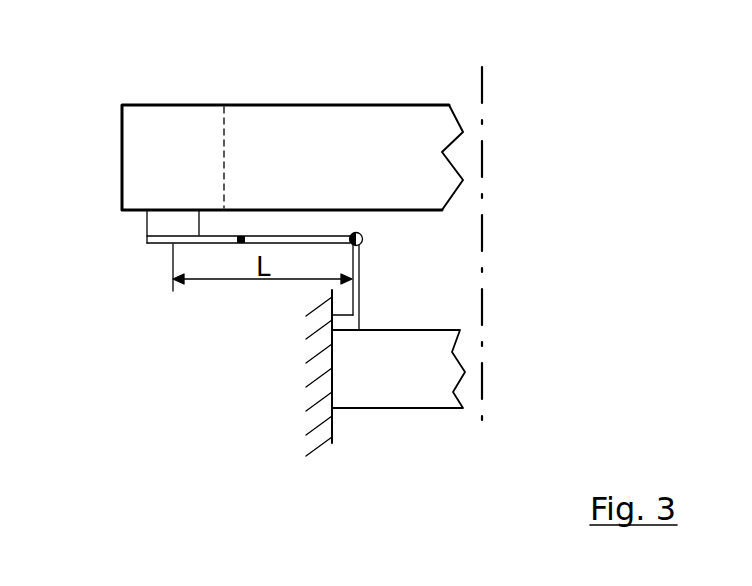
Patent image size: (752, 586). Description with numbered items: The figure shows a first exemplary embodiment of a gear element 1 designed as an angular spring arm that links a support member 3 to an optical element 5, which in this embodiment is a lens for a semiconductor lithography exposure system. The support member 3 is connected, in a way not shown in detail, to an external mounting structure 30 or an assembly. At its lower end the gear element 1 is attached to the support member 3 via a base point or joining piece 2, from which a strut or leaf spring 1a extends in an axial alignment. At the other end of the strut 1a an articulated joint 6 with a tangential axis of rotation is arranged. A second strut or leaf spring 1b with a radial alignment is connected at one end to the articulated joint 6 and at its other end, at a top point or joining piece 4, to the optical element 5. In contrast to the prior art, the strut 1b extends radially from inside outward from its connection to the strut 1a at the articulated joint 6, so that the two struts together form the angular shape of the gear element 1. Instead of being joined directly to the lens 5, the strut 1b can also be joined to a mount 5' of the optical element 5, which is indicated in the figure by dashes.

The gear element 1 is at (313, 247).
The strut or leaf spring 1a is at (359, 283).
The second strut or leaf spring 1b is at (241, 240).
The base point or joining piece 2 is at (342, 326).
The support member 3 is at (347, 372).
The top point or joining piece 4 is at (167, 225).
The optical element 5 is at (292, 157).
The mount 5' is at (221, 108).
The articulated joint 6 is at (362, 237).
The external mounting structure 30 is at (332, 433).